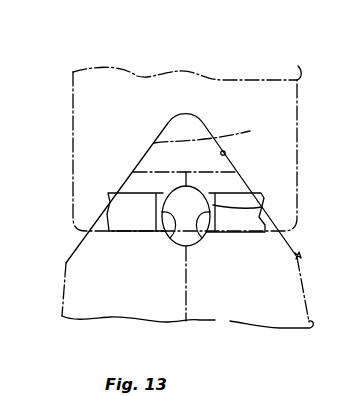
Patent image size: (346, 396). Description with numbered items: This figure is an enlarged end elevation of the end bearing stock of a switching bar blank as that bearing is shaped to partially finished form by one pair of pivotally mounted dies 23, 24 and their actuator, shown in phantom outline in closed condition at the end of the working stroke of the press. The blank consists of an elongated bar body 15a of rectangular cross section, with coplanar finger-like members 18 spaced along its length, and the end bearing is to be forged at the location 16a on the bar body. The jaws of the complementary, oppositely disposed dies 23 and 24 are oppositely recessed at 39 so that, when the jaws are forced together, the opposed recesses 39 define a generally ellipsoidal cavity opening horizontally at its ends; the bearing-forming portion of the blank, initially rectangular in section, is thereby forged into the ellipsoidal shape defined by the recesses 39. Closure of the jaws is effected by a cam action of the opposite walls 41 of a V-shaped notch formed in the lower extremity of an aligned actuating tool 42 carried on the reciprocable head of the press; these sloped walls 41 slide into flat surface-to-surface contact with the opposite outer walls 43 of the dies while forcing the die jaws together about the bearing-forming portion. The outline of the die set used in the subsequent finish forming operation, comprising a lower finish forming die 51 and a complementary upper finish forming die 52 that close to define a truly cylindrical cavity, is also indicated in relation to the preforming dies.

The upper finish forming die 52 is at (207, 149).
The actuating tool 42 is at (298, 66).
The walls of V-shaped notch 41 is at (225, 151).
The die 23 is at (66, 263).
The die 24 is at (310, 328).
The outer walls of the dies 43 is at (297, 257).
The lower finish forming die 51 is at (335, 277).
The finger-like members 18 is at (118, 210).
The bar body 15a is at (262, 207).
The bearing location 16a is at (184, 236).
The recesses 39 is at (166, 243).